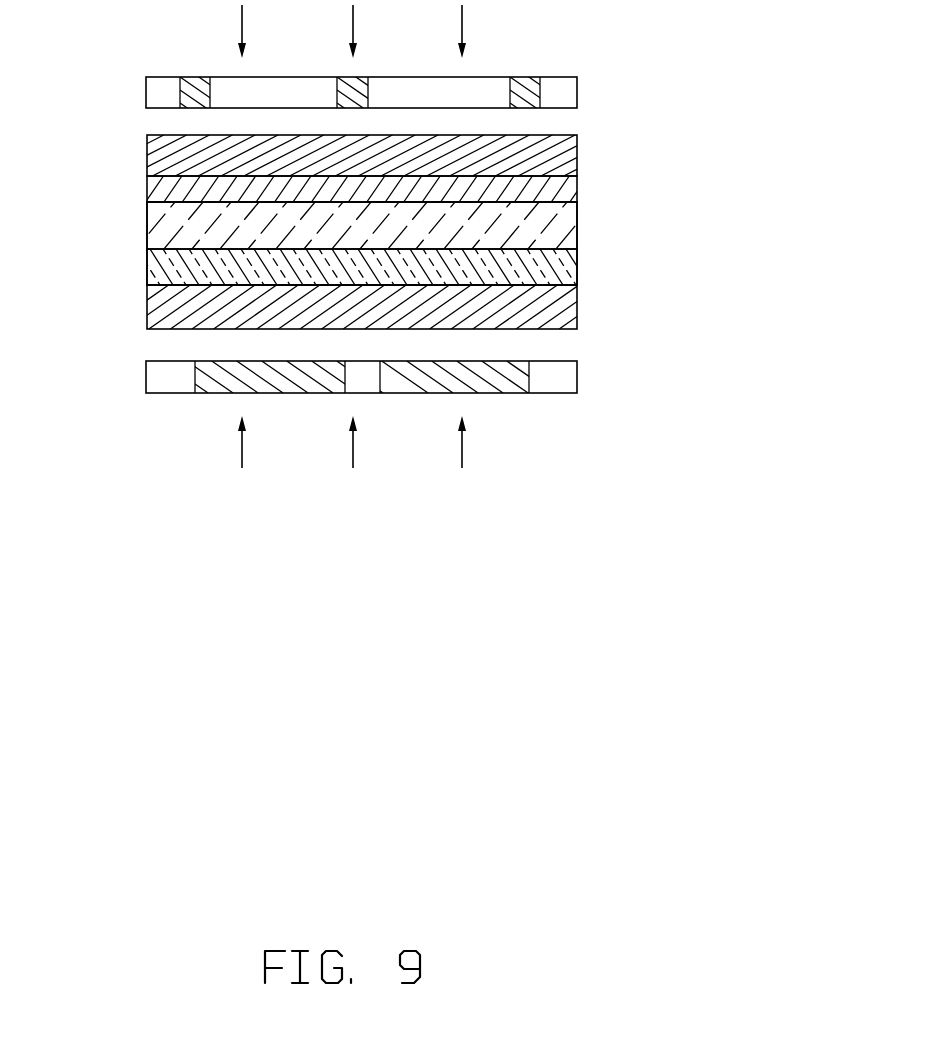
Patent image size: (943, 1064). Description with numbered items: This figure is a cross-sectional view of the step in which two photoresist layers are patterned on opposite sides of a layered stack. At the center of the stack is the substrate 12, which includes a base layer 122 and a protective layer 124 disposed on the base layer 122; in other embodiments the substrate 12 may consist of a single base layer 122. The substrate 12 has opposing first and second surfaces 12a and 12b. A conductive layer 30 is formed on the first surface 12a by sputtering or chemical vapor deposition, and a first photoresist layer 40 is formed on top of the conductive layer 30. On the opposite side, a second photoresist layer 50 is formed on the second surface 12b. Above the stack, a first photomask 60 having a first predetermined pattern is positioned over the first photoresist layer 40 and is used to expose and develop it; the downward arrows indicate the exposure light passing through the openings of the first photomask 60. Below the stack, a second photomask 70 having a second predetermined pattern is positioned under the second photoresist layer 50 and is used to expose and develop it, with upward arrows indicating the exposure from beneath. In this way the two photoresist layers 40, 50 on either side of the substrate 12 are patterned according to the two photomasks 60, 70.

The first photomask 60 is at (565, 98).
The second photomask 70 is at (557, 380).
The first photoresist layer 40 is at (163, 153).
The conductive layer 30 is at (162, 188).
The second photoresist layer 50 is at (153, 325).
The substrate 12 is at (414, 243).
The base layer 122 is at (550, 227).
The protective layer 124 is at (553, 267).
The first surface 12a is at (553, 198).
The second surface 12b is at (565, 286).